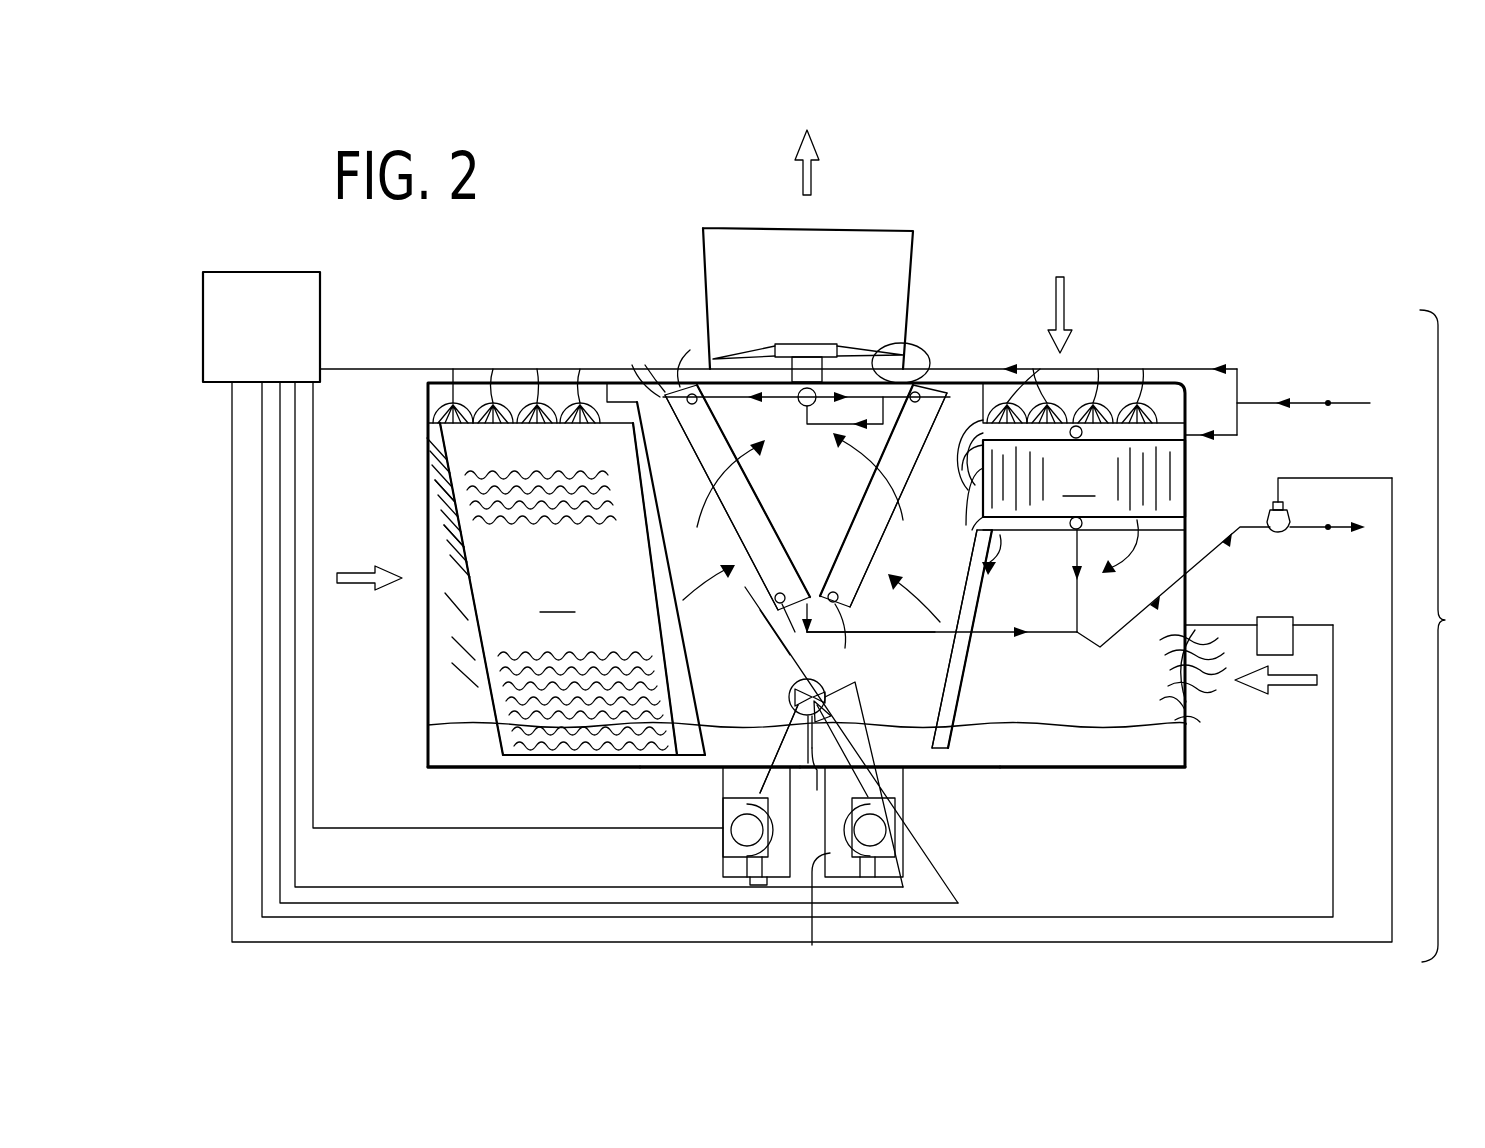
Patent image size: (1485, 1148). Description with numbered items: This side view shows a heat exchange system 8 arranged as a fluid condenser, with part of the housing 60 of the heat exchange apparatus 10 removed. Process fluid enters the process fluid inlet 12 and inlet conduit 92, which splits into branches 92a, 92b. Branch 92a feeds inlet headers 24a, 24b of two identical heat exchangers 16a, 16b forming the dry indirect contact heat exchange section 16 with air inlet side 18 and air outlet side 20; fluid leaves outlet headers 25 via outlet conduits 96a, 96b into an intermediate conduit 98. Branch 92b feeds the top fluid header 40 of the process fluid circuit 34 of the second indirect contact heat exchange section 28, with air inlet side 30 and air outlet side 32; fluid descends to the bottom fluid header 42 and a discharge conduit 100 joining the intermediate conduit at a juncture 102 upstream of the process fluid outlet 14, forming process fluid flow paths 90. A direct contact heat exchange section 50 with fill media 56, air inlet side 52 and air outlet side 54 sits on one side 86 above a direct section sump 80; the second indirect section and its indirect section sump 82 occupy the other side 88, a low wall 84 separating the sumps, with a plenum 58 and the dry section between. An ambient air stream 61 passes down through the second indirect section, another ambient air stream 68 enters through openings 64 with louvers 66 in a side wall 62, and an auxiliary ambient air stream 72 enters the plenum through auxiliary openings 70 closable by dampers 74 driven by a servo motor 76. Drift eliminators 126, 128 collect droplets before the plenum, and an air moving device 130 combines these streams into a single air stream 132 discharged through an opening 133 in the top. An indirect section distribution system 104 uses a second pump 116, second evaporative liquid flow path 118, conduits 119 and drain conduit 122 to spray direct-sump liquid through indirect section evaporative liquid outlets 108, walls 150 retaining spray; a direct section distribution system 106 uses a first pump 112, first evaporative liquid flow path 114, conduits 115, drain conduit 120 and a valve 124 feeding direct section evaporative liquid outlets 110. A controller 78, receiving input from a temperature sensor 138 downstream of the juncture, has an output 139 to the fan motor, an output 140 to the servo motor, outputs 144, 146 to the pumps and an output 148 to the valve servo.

The heat exchange system 8 is at (1440, 636).
The heat exchange apparatus 10 is at (418, 391).
The process fluid inlet 12 is at (1328, 400).
The process fluid outlet 14 is at (1328, 524).
The dry indirect contact heat exchange section 16 is at (809, 503).
The heat exchanger 16a is at (742, 556).
The heat exchanger 16b is at (884, 577).
The air inlet side 18 is at (690, 478).
The air outlet side 20 is at (712, 419).
The inlet header 24a is at (692, 394).
The inlet header 24b is at (920, 346).
The outlet header 25 is at (774, 600).
The second indirect contact heat exchange section 28 is at (1084, 478).
The air inlet side 30 is at (980, 476).
The air outlet side 32 is at (1047, 540).
The process fluid circuit 34 is at (1185, 470).
The top fluid header 40 is at (982, 505).
The bottom fluid header 42 is at (985, 530).
The direct contact heat exchange section 50 is at (572, 589).
The air inlet side 52 is at (478, 650).
The air outlet side 54 is at (650, 614).
The fill media 56 is at (542, 474).
The plenum 58 is at (789, 697).
The housing 60 is at (430, 725).
The ambient air stream 61 is at (1066, 294).
The side wall 62 is at (440, 445).
The openings 64 is at (445, 478).
The louvers 66 is at (445, 560).
The ambient air stream 68 is at (362, 584).
The auxiliary openings 70 is at (1196, 652).
The ambient air stream 72 is at (1300, 690).
The dampers 74 is at (1176, 650).
The servo motor 76 is at (1280, 620).
The controller 78 is at (215, 312).
The direct section sump 80 is at (450, 770).
The indirect section sump 82 is at (1048, 767).
The low wall 84 is at (809, 777).
The one side 86 is at (588, 770).
The other side 88 is at (956, 770).
The process fluid flow paths 90 is at (933, 635).
The inlet conduit 92 is at (1268, 403).
The branch 92a is at (1165, 369).
The branch 92b is at (1237, 435).
The outlet conduit 96a is at (810, 632).
The outlet conduit 96b is at (861, 639).
The intermediate conduit 98 is at (988, 634).
The discharge conduit 100 is at (1077, 600).
The juncture 102 is at (1100, 650).
The indirect section distribution system 104 is at (1093, 403).
The direct section distribution system 106 is at (453, 403).
The indirect section evaporative liquid outlets 108 is at (1007, 403).
The direct section evaporative liquid outlets 110 is at (537, 403).
The first pump 112 is at (880, 846).
The first evaporative liquid flow path 114 is at (790, 660).
The conduits 115 is at (830, 737).
The second pump 116 is at (740, 836).
The second evaporative liquid flow path 118 is at (757, 790).
The conduits 119 is at (806, 745).
The drain conduit 120 is at (818, 948).
The drain conduit 122 is at (758, 884).
The valve 124 is at (790, 708).
The drift eliminator 126 is at (640, 548).
The drift eliminator 128 is at (950, 700).
The air moving device 130 is at (807, 344).
The combined air stream 132 is at (810, 180).
The opening 133 is at (750, 228).
The input mechanism 138 is at (1283, 532).
The output 139 is at (396, 369).
The output 140 is at (1333, 855).
The output 144 is at (520, 887).
The output 146 is at (445, 828).
The output 148 is at (948, 890).
The walls 150 is at (985, 445).